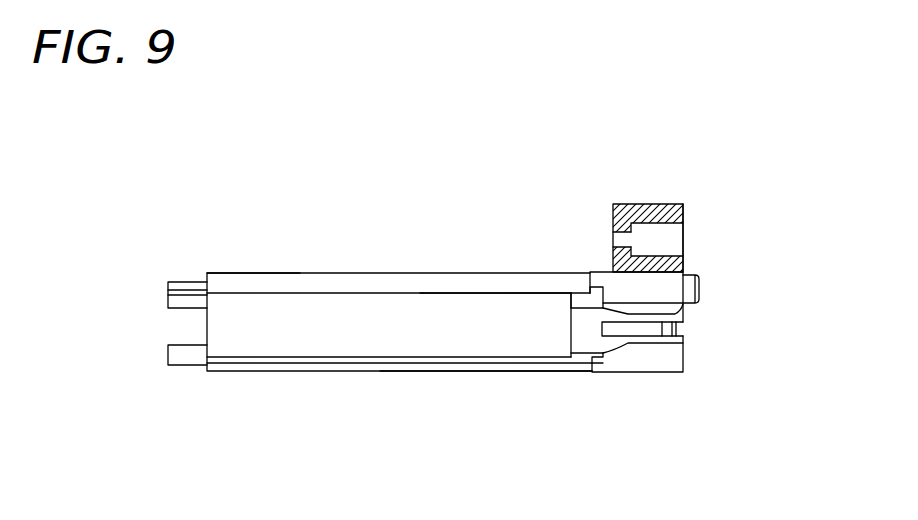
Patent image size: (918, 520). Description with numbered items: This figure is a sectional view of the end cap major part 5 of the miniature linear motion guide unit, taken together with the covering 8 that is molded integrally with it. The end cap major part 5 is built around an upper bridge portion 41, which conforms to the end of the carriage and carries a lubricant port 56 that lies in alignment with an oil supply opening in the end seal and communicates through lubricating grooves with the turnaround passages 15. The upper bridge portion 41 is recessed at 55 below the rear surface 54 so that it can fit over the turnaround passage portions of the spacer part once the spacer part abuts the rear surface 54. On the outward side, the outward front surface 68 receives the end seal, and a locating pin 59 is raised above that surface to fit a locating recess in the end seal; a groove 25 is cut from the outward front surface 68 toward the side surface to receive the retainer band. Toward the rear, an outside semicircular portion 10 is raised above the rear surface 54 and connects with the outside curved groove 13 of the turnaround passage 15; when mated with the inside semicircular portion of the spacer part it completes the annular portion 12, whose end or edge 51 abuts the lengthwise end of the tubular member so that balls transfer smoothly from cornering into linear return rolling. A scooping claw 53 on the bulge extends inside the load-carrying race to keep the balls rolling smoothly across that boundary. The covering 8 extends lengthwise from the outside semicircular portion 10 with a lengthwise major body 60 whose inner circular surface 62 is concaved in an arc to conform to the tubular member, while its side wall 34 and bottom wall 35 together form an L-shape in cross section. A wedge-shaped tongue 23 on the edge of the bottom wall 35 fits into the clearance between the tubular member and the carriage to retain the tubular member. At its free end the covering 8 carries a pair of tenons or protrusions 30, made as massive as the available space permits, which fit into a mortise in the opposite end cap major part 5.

The end cap major part 5 is at (440, 265).
The covering 8 is at (308, 304).
The lengthwise major body 60 is at (368, 283).
The tenon or protrusion 30 is at (183, 286).
The side wall 34 is at (302, 345).
The tongue 23 is at (338, 359).
The bottom wall 35 is at (390, 367).
The inner circular surface 62 is at (466, 333).
The end or edge of outside semicircular portion 51 is at (572, 300).
The outside semicircular portion 10 is at (611, 287).
The annular portion 12 is at (583, 298).
The outside curved groove 13 is at (606, 381).
The turnaround passage 15 is at (590, 340).
The scooping claw 53 is at (623, 331).
The recess 55 is at (590, 358).
The groove 25 is at (684, 329).
The locating pin 59 is at (686, 278).
The upper bridge portion 41 is at (635, 214).
The rear surface 54 is at (612, 214).
The lubricant port 56 is at (652, 236).
The outward front surface 68 is at (687, 212).